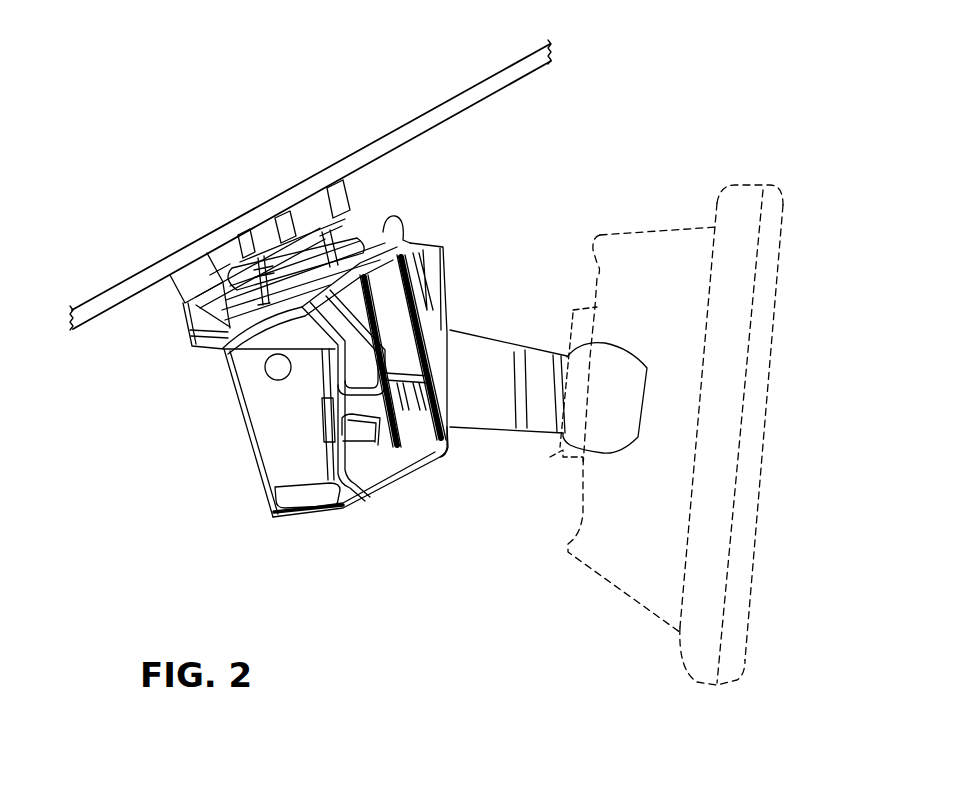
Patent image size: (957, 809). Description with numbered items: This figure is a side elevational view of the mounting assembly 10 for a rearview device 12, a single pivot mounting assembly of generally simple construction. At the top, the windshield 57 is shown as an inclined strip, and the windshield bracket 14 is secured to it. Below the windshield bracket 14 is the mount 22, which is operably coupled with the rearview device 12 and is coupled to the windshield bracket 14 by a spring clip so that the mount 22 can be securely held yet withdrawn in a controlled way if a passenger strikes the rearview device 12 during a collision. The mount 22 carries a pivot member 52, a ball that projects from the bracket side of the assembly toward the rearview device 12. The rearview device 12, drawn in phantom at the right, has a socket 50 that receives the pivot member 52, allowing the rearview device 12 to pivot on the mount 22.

The mounting assembly 10 is at (573, 108).
The rearview device 12 is at (747, 183).
The windshield bracket 14 is at (187, 278).
The mount 22 is at (417, 246).
The socket 50 is at (560, 453).
The pivot member 52 is at (563, 353).
The windshield 57 is at (410, 131).